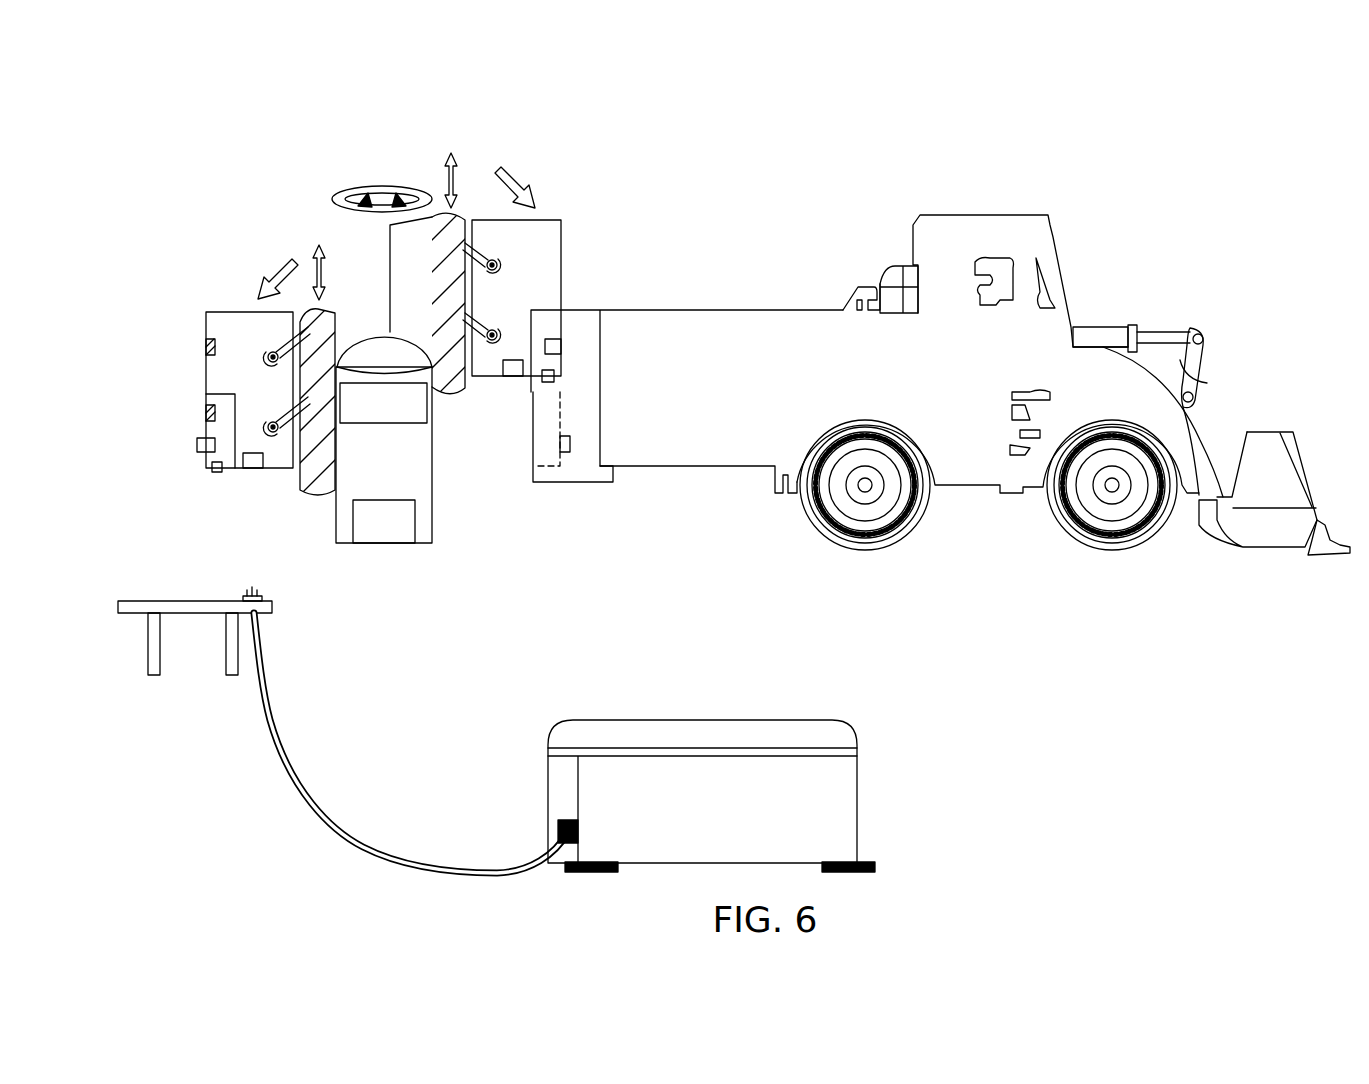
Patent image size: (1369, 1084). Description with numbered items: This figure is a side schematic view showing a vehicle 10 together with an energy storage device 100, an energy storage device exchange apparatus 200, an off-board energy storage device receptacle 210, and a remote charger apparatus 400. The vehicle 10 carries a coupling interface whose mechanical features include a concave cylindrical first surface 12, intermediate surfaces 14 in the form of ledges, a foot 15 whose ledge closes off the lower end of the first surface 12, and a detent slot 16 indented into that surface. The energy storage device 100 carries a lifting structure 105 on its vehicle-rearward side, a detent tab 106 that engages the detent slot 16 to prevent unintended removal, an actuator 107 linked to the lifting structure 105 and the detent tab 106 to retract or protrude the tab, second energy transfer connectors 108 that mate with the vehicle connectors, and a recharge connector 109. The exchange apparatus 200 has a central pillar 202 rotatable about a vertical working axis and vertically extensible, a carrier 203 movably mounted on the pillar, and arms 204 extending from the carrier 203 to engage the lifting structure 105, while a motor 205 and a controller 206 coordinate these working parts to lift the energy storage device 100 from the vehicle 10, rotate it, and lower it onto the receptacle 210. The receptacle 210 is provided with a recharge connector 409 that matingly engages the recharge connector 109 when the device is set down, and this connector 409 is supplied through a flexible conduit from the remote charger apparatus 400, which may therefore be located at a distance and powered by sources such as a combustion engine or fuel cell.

The vehicle 10 is at (911, 380).
The first surface 12 is at (560, 423).
The intermediate surfaces 14 is at (543, 303).
The foot 15 is at (555, 483).
The detent slot 16 is at (572, 446).
The energy storage device 100 is at (225, 297).
The lifting structure 105 is at (268, 352).
The detent tab 106 is at (197, 445).
The actuator 107 is at (212, 467).
The second energy transfer connectors 108 is at (206, 347).
The recharge connector 109 is at (255, 470).
The energy storage device exchange apparatus 200 is at (389, 168).
The central pillar 202 is at (384, 380).
The carrier 203 is at (317, 490).
The arms 204 is at (484, 368).
The motor 205 is at (384, 521).
The controller 206 is at (383, 403).
The energy storage device receptacle 210 is at (148, 632).
The remote charger apparatus 400 is at (711, 796).
The recharge connector 409 is at (245, 595).